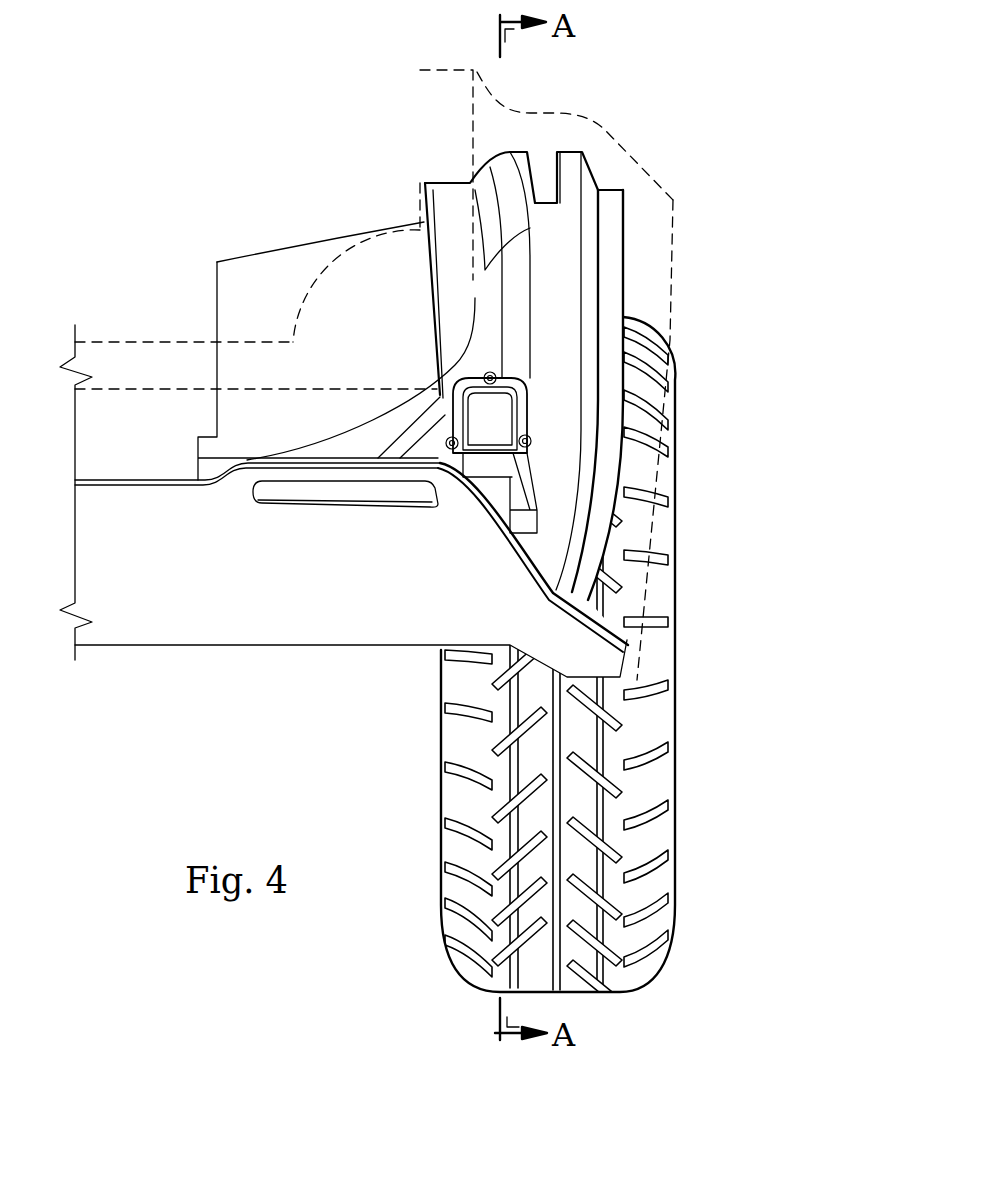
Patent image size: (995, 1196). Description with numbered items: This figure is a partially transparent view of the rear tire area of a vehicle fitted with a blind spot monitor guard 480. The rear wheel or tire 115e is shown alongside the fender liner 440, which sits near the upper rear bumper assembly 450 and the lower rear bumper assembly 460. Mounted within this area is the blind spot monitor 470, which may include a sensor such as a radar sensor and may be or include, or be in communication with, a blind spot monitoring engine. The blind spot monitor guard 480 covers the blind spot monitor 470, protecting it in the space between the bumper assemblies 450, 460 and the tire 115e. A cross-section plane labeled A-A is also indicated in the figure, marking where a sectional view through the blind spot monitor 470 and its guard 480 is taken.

The fender liner 440 is at (593, 170).
The upper rear bumper assembly 450 is at (175, 342).
The lower rear bumper assembly 460 is at (252, 646).
The blind spot monitor 470 is at (462, 426).
The blind spot monitor guard 480 is at (530, 500).
The wheel or tire 115e is at (677, 717).